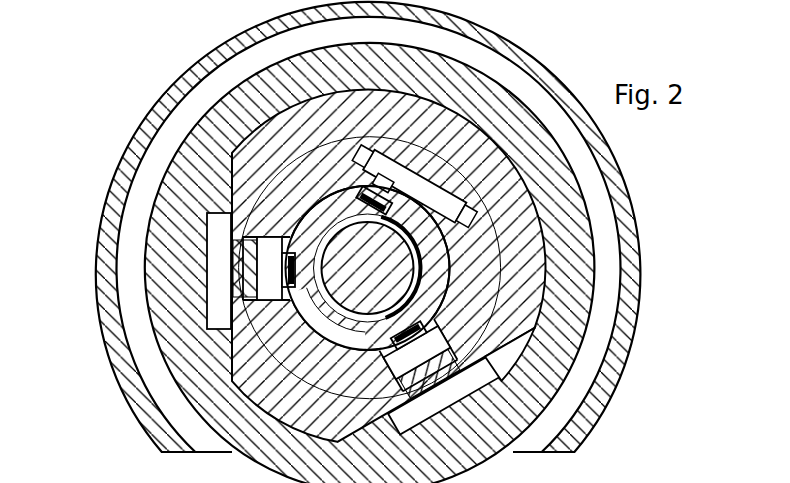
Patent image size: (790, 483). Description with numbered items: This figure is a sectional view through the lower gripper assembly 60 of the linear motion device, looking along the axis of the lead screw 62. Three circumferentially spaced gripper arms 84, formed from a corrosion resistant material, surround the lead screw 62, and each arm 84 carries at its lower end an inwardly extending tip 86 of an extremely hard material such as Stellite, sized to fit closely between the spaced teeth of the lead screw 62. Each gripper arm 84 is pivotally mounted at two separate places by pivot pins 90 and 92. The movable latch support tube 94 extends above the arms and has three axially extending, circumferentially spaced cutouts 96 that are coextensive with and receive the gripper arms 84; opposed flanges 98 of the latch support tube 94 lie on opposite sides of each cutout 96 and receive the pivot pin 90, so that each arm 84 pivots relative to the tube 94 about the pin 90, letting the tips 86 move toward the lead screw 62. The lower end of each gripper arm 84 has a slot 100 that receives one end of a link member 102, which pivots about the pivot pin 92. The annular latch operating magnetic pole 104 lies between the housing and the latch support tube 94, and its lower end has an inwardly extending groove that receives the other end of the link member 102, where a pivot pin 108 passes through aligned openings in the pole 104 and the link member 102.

The lower gripper assembly 60 is at (412, 172).
The lead screw 62 is at (410, 240).
The gripper arm 84 is at (280, 227).
The tip 86 is at (385, 196).
The pivot pin 90 is at (388, 140).
The pivot pin 92 is at (268, 272).
The latch support tube 94 is at (258, 120).
The cutout 96 is at (390, 177).
The flange 98 is at (364, 147).
The slot 100 is at (423, 382).
The link member 102 is at (233, 248).
The latch operating magnetic pole 104 is at (302, 110).
The pivot pin 108 is at (213, 313).